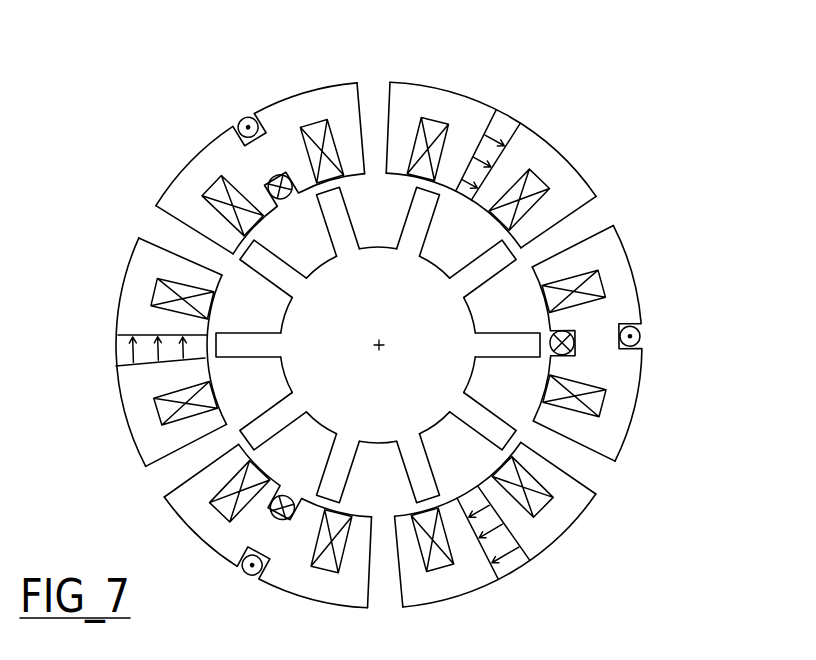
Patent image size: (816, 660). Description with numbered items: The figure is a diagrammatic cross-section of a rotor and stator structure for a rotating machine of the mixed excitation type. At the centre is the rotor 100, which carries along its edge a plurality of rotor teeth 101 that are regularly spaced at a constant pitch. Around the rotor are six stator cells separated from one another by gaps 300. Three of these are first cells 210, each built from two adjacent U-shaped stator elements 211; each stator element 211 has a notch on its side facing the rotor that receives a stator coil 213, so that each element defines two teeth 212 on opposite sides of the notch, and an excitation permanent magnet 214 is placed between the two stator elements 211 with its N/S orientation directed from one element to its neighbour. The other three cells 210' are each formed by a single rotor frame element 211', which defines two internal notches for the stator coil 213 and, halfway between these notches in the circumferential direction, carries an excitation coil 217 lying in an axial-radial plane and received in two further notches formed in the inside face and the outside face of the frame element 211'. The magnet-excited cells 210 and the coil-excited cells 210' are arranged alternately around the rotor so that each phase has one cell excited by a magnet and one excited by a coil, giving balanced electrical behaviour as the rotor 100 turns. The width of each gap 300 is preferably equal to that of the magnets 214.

The rotor 100 is at (398, 307).
The rotor teeth 101 is at (328, 473).
The cell 210 is at (327, 341).
The cell 210' is at (430, 335).
The stator element 211 is at (386, 308).
The rotor frame element 211' is at (135, 143).
The teeth 212 is at (364, 176).
The stator coil 213 is at (312, 122).
The excitation permanent magnet 214 is at (499, 112).
The excitation coil 217 is at (246, 118).
The gap 300 is at (199, 245).